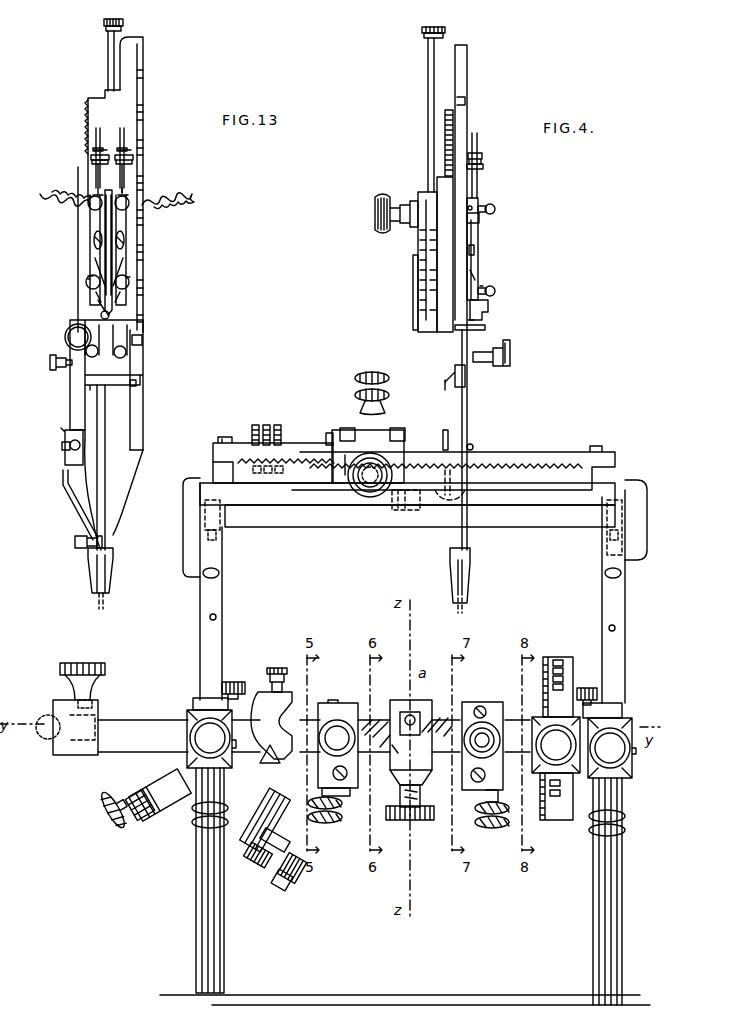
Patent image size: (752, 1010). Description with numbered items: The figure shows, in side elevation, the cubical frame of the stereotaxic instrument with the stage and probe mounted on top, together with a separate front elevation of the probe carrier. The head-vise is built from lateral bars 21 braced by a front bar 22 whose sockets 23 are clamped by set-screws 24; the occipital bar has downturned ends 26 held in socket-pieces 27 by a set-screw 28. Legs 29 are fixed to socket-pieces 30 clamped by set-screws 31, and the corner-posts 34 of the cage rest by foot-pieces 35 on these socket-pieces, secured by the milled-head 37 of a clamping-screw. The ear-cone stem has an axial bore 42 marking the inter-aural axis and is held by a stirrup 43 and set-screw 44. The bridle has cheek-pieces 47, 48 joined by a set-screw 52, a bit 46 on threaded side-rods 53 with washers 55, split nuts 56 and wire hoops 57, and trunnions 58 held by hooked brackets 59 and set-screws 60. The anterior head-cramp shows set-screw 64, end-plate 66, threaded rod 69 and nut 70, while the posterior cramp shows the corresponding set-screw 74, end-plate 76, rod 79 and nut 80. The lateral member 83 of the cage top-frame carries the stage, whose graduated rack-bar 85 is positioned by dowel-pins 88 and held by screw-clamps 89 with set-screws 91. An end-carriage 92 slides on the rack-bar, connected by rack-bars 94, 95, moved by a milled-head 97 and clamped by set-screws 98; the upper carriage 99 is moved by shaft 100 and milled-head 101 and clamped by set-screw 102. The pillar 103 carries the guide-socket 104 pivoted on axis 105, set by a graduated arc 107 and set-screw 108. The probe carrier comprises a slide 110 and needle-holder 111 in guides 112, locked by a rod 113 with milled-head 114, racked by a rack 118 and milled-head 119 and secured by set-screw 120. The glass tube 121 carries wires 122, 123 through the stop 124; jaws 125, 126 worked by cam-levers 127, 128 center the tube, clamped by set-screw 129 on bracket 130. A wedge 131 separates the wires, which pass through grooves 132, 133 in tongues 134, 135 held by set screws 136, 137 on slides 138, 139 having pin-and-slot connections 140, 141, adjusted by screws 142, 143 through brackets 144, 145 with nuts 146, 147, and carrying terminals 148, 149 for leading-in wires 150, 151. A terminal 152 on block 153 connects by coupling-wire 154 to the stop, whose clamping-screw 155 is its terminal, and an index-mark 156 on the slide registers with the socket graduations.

In FIG. 4, the lateral bars 21 is at (123, 718).
In FIG. 4, the front transverse bar 22 is at (45, 715).
In FIG. 4, the sockets 23 is at (70, 755).
In FIG. 4, the set-screws 24 is at (60, 665).
In FIG. 4, the ends of occipital bar 26 is at (562, 668).
In FIG. 4, the socket-pieces 27 is at (547, 687).
In FIG. 4, the set-screw 28 is at (547, 796).
In FIG. 4, the legs 29 is at (195, 910).
In FIG. 4, the socket-piece 30 is at (188, 718).
In FIG. 4, the set-screw 31 is at (192, 745).
In FIG. 4, the corner-posts 34 is at (200, 600).
In FIG. 4, the foot-piece 35 is at (195, 698).
In FIG. 4, the milled-head 37 is at (235, 680).
In FIG. 4, the axial bore 42 is at (408, 718).
In FIG. 4, the stirrup 43 is at (425, 721).
In FIG. 4, the set-screw 44 is at (423, 820).
In FIG. 4, the bit 46 is at (253, 823).
In FIG. 4, the cheek-piece 47 is at (183, 815).
In FIG. 4, the cheek-piece 48 is at (135, 782).
In FIG. 4, the set-screw 52 is at (107, 822).
In FIG. 4, the threaded side-rods 53 is at (323, 525).
In FIG. 4, the washer 55 is at (246, 862).
In FIG. 4, the split nut 56 is at (300, 874).
In FIG. 4, the hoop of wire 57 is at (268, 855).
In FIG. 4, the trunnions 58 is at (278, 756).
In FIG. 4, the hooked brackets 59 is at (271, 725).
In FIG. 4, the set-screws 60 is at (275, 666).
In FIG. 4, the set-screw 64 is at (330, 820).
In FIG. 4, the inner end-plate 66 is at (348, 794).
In FIG. 4, the threaded rod 69 is at (334, 728).
In FIG. 4, the nut 70 is at (336, 724).
In FIG. 4, the set-screw 74 is at (488, 828).
In FIG. 4, the inner end-plate 76 is at (470, 790).
In FIG. 4, the threaded rod 79 is at (488, 731).
In FIG. 4, the nut 80 is at (482, 710).
In FIG. 4, the lateral member of cage top-frame 83 is at (290, 497).
In FIG. 4, the rack-bar 85 is at (557, 459).
In FIG. 4, the dowel-pins 88 is at (210, 619).
In FIG. 4, the U-shaped screw-clamps 89 is at (187, 537).
In FIG. 4, the set-screw 91 is at (222, 567).
In FIG. 4, the end-carriage 92 is at (346, 474).
In FIG. 4, the rack-bar 94 is at (342, 432).
In FIG. 4, the rack-bar 95 is at (370, 430).
In FIG. 4, the milled-head 97 is at (370, 498).
In FIG. 4, the set-screws 98 is at (368, 392).
In FIG. 4, the carriage 99 is at (397, 428).
In FIG. 4, the shaft 100 is at (324, 436).
In FIG. 4, the milled-head 101 is at (264, 425).
In FIG. 4, the set-screw 102 is at (372, 373).
In FIG. 4, the pillar 103 is at (420, 190).
In FIG. 4, the guide-socket 104 is at (428, 228).
In FIG. 4, the axis 105 is at (403, 514).
In FIG. 4, the graduated arc 107 is at (413, 270).
In FIG. 4, the set-screw 108 is at (373, 217).
In FIG. 13, the slide 110 is at (118, 424).
In FIG. 4, the slide 110 is at (420, 311).
In FIG. 13, the needle-holder 111 is at (135, 103).
In FIG. 4, the needle-holder 111 is at (470, 121).
In FIG. 13, the guides 112 is at (75, 396).
In FIG. 13, the rod 113 is at (108, 62).
In FIG. 4, the rod 113 is at (428, 89).
In FIG. 13, the milled-head 114 is at (103, 22).
In FIG. 4, the milled-head 114 is at (445, 32).
In FIG. 13, the rack 118 is at (87, 116).
In FIG. 4, the rack 118 is at (445, 135).
In FIG. 13, the milled-head 119 is at (66, 332).
In FIG. 4, the milled-head 119 is at (508, 352).
In FIG. 13, the set-screw 120 is at (50, 365).
In FIG. 4, the set-screw 120 is at (460, 400).
In FIG. 13, the glass tube 121 is at (105, 443).
In FIG. 4, the glass tube 121 is at (468, 416).
In FIG. 13, the wire 122 is at (95, 268).
In FIG. 4, the wire 122 is at (475, 280).
In FIG. 13, the wire 123 is at (125, 270).
In FIG. 13, the stop 124 is at (90, 580).
In FIG. 4, the stop 124 is at (472, 590).
In FIG. 13, the jaw 125 is at (92, 390).
In FIG. 4, the jaw 125 is at (473, 381).
In FIG. 13, the jaw 126 is at (138, 388).
In FIG. 13, the cam-lever 127 is at (90, 346).
In FIG. 4, the cam-lever 127 is at (471, 334).
In FIG. 13, the cam-lever 128 is at (140, 334).
In FIG. 13, the set-screw 129 is at (125, 348).
In FIG. 4, the set-screw 129 is at (478, 325).
In FIG. 13, the bracket 130 is at (103, 312).
In FIG. 4, the bracket 130 is at (481, 312).
In FIG. 4, the wedge 131 is at (480, 233).
In FIG. 13, the groove 132 is at (100, 296).
In FIG. 13, the groove 133 is at (120, 300).
In FIG. 13, the tongue 134 is at (86, 283).
In FIG. 13, the tongue 135 is at (129, 292).
In FIG. 13, the set screw 136 is at (90, 282).
In FIG. 4, the set screw 136 is at (496, 291).
In FIG. 13, the set screw 137 is at (128, 285).
In FIG. 13, the metal slide 138 is at (95, 221).
In FIG. 4, the metal slide 138 is at (480, 228).
In FIG. 13, the metal slide 139 is at (126, 222).
In FIG. 13, the pin-and-slot connection 140 is at (95, 242).
In FIG. 4, the pin-and-slot connection 140 is at (475, 253).
In FIG. 13, the pin-and-slot connection 141 is at (125, 243).
In FIG. 13, the screw 142 is at (97, 180).
In FIG. 4, the screw 142 is at (485, 181).
In FIG. 13, the screw 143 is at (118, 185).
In FIG. 13, the bracket 144 is at (90, 153).
In FIG. 4, the bracket 144 is at (482, 160).
In FIG. 13, the bracket 145 is at (138, 148).
In FIG. 13, the nut 146 is at (90, 158).
In FIG. 4, the nut 146 is at (482, 167).
In FIG. 13, the nut 147 is at (125, 172).
In FIG. 13, the screw-terminal 148 is at (88, 203).
In FIG. 4, the screw-terminal 148 is at (496, 206).
In FIG. 13, the screw-terminal 149 is at (130, 203).
In FIG. 13, the leading-in wire 150 is at (40, 195).
In FIG. 13, the leading-in wire 151 is at (185, 198).
In FIG. 13, the screw-terminal 152 is at (70, 443).
In FIG. 4, the screw-terminal 152 is at (474, 443).
In FIG. 13, the block 153 is at (68, 460).
In FIG. 4, the block 153 is at (451, 436).
In FIG. 13, the coupling-wire 154 is at (68, 508).
In FIG. 4, the coupling-wire 154 is at (464, 498).
In FIG. 13, the clamping-screw 155 is at (75, 544).
In FIG. 4, the index-mark 156 is at (481, 293).